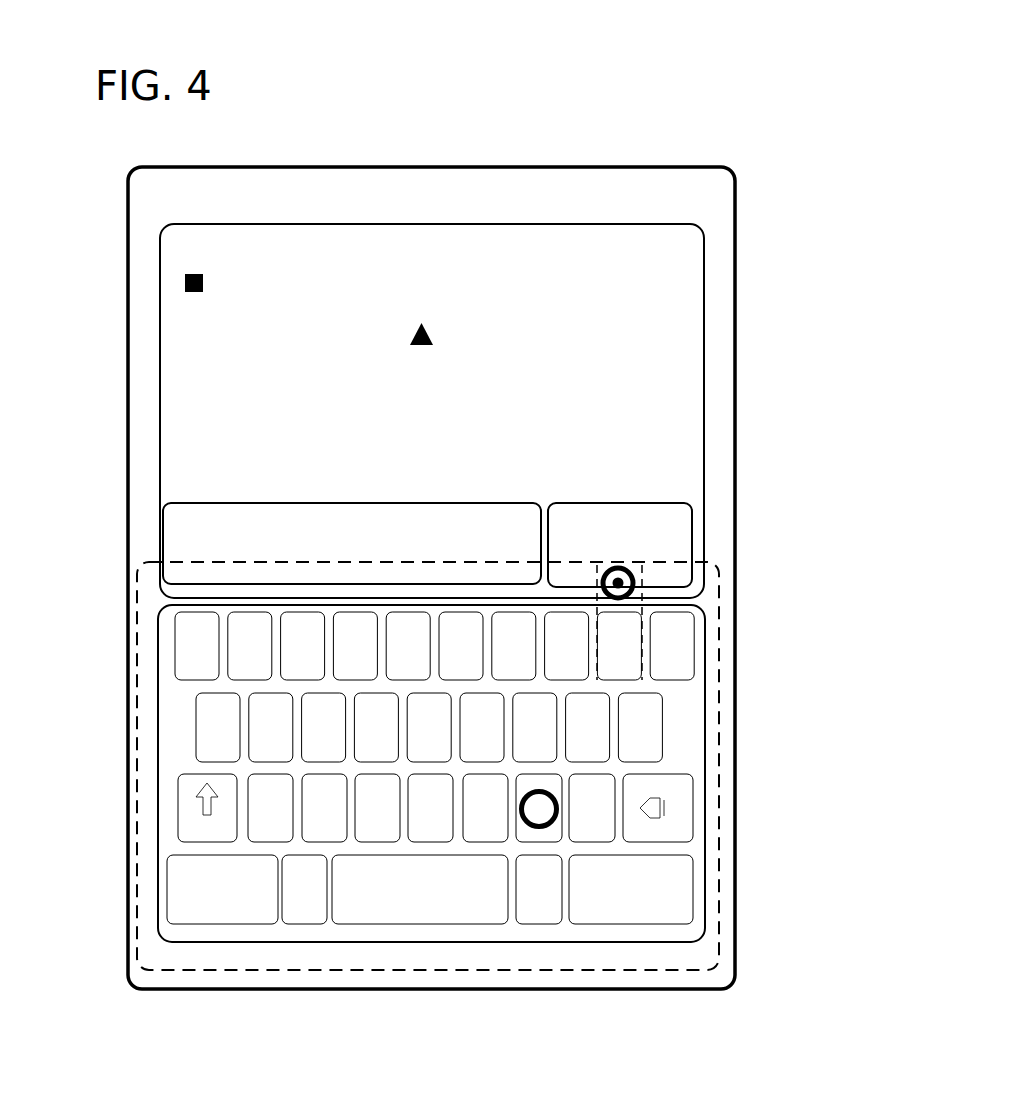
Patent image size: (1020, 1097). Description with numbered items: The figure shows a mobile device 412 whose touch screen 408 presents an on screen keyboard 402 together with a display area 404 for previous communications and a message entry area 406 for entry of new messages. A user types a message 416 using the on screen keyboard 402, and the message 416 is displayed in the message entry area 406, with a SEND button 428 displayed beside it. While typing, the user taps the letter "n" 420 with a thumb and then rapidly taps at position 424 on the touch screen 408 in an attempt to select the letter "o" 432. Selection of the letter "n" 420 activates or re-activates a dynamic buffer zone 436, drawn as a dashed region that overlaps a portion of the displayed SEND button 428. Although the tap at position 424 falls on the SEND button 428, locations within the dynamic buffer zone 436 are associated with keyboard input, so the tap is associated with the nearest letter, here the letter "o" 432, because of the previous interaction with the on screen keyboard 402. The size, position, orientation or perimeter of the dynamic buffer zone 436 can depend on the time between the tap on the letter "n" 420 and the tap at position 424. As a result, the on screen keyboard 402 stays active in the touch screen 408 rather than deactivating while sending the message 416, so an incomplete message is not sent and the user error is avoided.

The mobile device 412 is at (429, 170).
The display area 404 is at (175, 358).
The touch screen 408 is at (147, 262).
The message entry area 406 is at (188, 512).
The message 416 is at (197, 537).
The SEND button 428 is at (655, 502).
The dynamic buffer zone 436 is at (138, 843).
The on screen keyboard 402 is at (429, 816).
The letter "o" 432 is at (617, 650).
The letter "n" 420 is at (531, 827).
The tapped position 424 is at (634, 588).